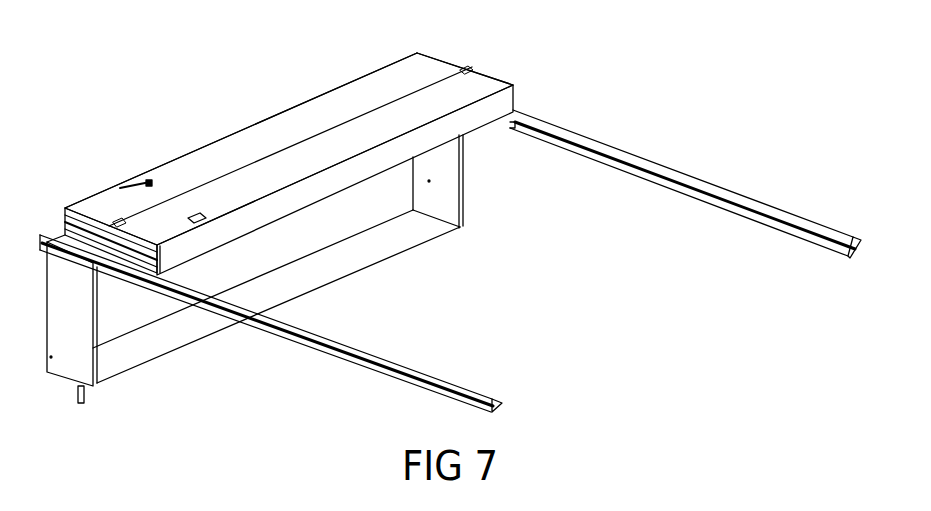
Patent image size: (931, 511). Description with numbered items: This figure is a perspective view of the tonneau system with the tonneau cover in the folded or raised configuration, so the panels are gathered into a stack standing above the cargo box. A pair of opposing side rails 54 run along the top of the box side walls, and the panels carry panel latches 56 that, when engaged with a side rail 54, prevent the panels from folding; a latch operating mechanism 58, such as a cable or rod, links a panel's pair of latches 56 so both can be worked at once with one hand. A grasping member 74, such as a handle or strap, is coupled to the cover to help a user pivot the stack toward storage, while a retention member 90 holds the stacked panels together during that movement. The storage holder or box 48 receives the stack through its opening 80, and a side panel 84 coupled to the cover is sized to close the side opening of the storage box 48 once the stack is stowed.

The storage holder or box 48 is at (108, 372).
The side rails 54 is at (466, 393).
The panel latches 56 is at (118, 220).
The latch operating mechanism 58 is at (338, 122).
The grasping member 74 is at (196, 214).
The opening 80 is at (409, 223).
The side panel 84 is at (423, 64).
The retention member 90 is at (128, 182).